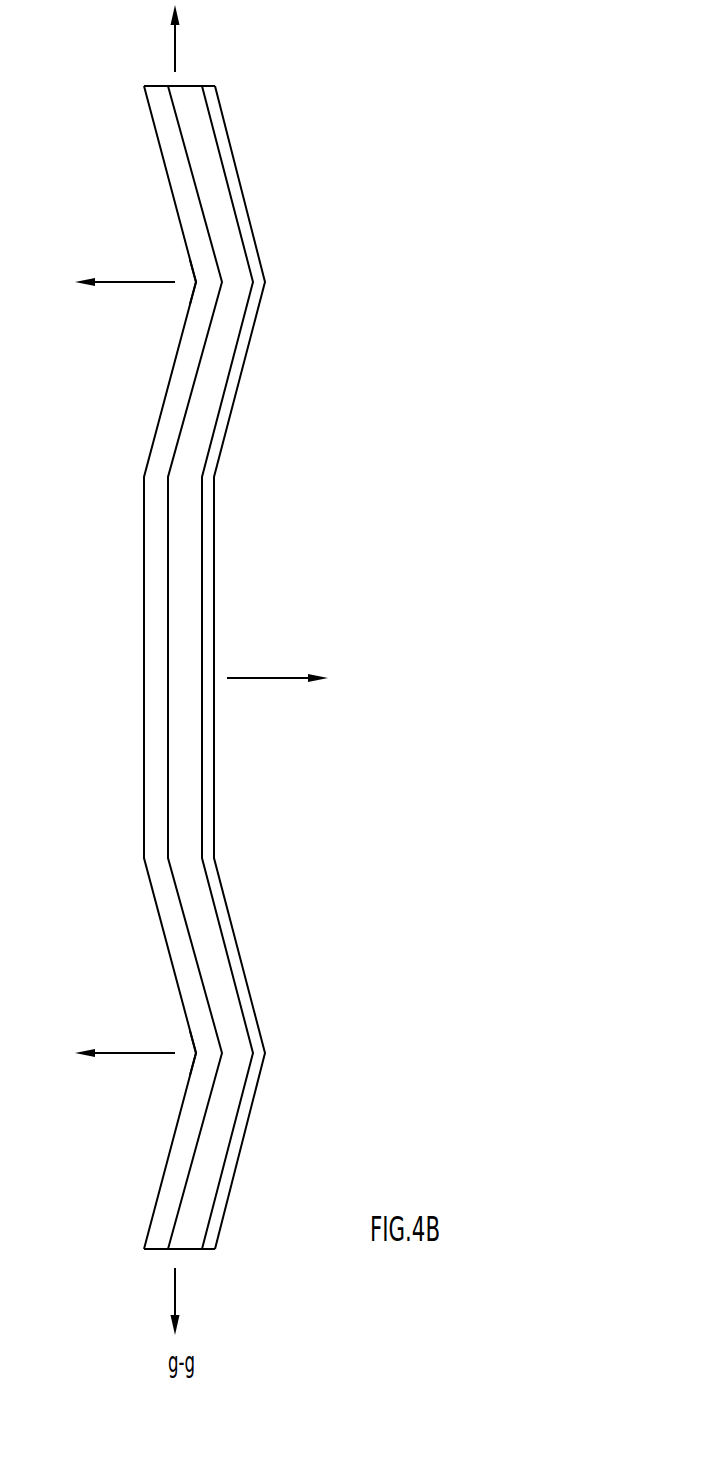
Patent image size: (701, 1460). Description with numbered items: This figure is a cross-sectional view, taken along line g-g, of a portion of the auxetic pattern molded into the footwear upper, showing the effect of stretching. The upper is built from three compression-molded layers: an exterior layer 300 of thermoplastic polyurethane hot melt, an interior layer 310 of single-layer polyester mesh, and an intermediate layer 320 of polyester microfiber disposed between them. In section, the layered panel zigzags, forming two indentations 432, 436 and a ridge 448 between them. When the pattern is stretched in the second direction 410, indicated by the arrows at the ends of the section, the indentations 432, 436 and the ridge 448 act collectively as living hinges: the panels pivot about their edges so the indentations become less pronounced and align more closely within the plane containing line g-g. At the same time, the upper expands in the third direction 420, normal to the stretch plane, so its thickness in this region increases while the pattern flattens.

The exterior layer 300 is at (169, 667).
The interior layer 310 is at (214, 772).
The intermediate layer 320 is at (188, 818).
The second direction 410 is at (176, 40).
The third direction 420 is at (131, 281).
The indentation 432 is at (165, 307).
The indentation 436 is at (163, 1075).
The ridge 448 is at (144, 571).